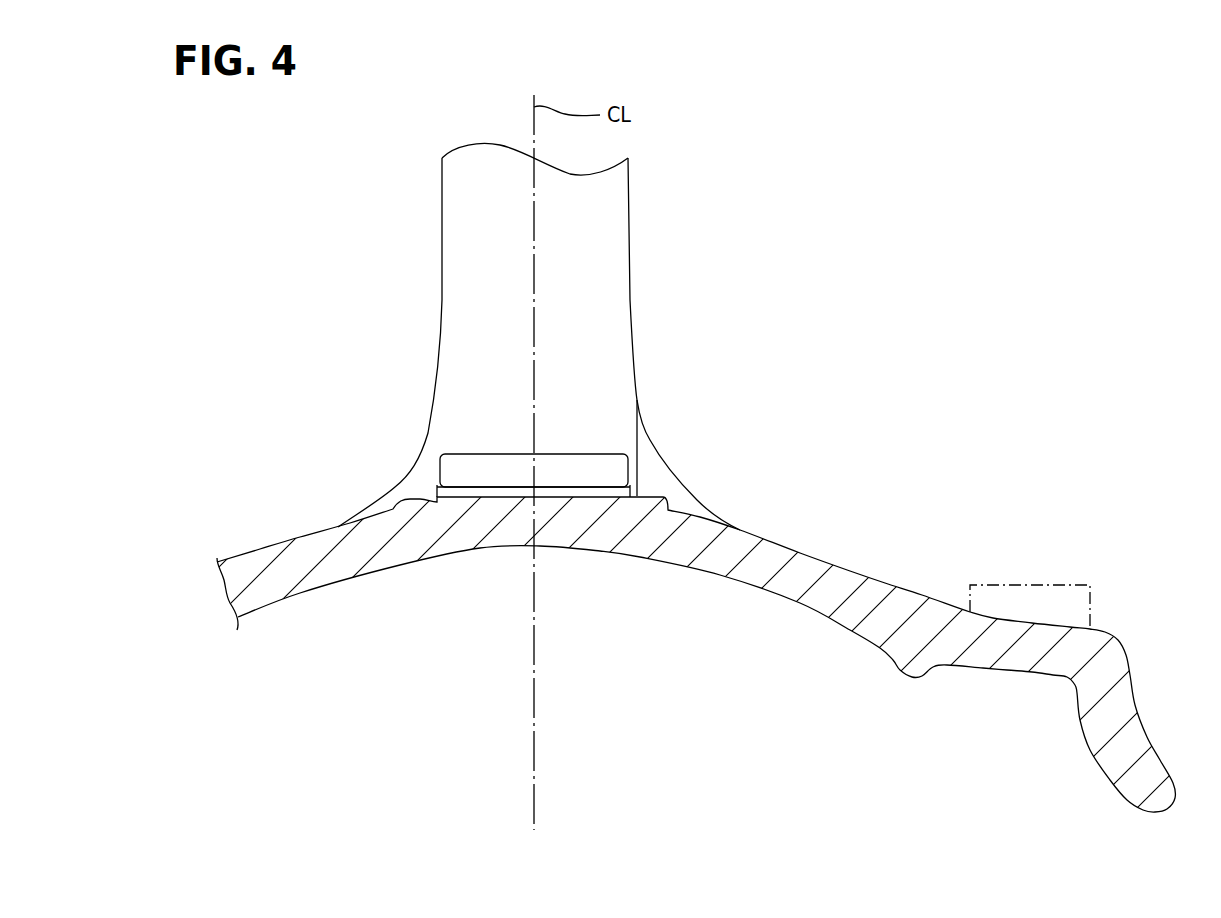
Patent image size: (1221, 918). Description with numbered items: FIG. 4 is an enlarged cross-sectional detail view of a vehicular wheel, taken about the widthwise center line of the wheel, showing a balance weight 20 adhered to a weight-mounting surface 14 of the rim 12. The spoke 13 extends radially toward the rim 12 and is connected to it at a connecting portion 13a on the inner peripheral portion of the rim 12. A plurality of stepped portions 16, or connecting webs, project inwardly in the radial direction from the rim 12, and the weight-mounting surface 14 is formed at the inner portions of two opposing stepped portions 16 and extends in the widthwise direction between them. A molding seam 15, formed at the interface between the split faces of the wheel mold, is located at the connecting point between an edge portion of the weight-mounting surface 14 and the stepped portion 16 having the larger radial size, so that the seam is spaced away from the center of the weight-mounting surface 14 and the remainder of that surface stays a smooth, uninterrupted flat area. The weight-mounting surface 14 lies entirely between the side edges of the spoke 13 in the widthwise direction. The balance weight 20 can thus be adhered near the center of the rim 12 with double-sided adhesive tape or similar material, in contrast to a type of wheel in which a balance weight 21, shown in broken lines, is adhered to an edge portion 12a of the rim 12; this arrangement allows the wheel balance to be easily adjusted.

The rim 12 is at (921, 657).
The edge portion 12a is at (1013, 627).
The spoke 13 is at (580, 260).
The connecting portion 13a is at (394, 486).
The weight-mounting surface 14 is at (513, 493).
The molding seam 15 is at (639, 462).
The stepped portion 16 is at (394, 510).
The balance weight 20 is at (580, 473).
The balance weight 21 is at (1050, 585).